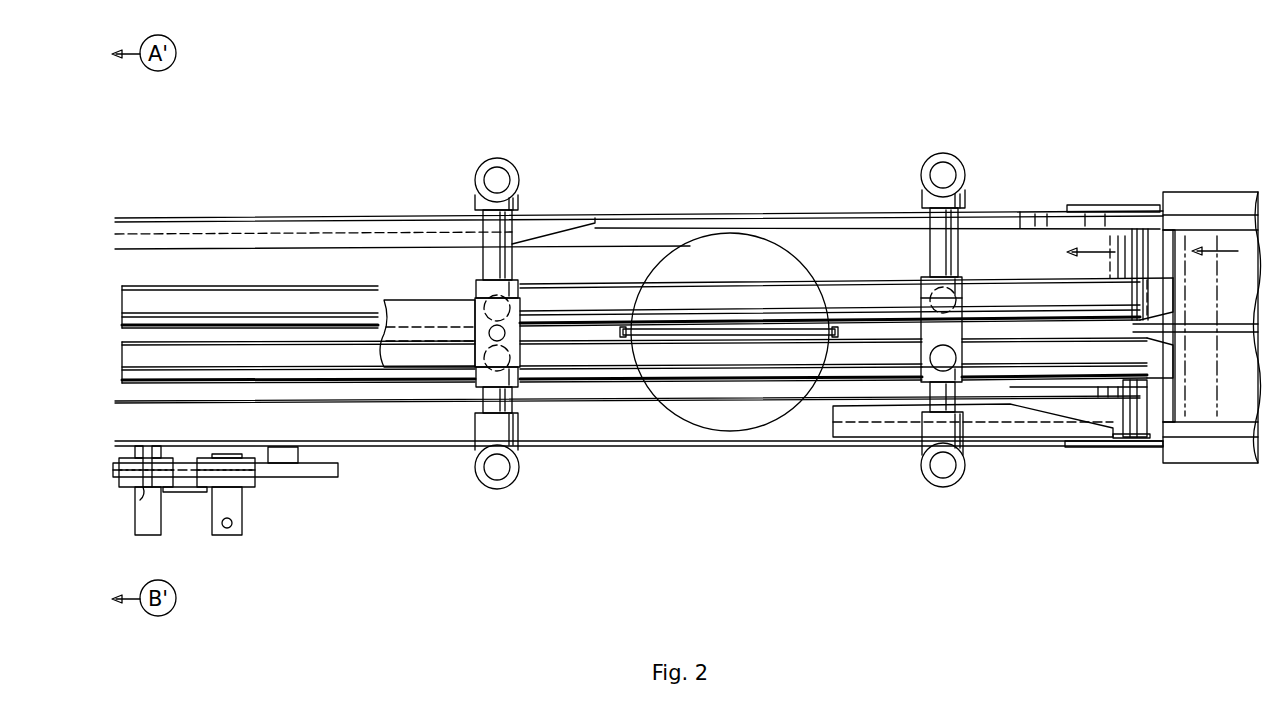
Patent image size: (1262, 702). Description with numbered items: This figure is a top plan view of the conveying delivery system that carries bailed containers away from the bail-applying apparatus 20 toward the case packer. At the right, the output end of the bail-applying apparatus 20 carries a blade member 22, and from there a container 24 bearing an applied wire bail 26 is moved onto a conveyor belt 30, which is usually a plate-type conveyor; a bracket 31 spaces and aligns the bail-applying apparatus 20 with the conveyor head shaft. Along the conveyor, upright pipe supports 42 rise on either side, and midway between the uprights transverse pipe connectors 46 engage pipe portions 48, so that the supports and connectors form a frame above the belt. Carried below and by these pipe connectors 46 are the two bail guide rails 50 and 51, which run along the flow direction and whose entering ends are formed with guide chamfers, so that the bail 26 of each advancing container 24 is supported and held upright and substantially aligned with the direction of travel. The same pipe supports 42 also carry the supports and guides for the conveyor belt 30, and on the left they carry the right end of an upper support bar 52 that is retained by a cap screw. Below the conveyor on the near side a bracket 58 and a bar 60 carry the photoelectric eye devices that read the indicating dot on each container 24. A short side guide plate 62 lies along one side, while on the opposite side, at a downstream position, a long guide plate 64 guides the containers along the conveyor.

The bail-applying apparatus 20 is at (1205, 455).
The blade member 22 is at (1197, 325).
The container 24 is at (786, 262).
The wire bail 26 is at (668, 322).
The conveyor belt 30 is at (658, 240).
The bracket 31 is at (1118, 205).
The upright pipe supports 42 is at (947, 158).
The pipe connectors 46 is at (518, 284).
The pipe portions 48 is at (483, 404).
The guide rail 50 is at (1028, 288).
The guide rail 51 is at (566, 368).
The upper support bar 52 is at (401, 300).
The bracket 58 is at (281, 458).
The bar 60 is at (300, 478).
The side guide plate means 62 is at (1032, 430).
The long guide plate 64 is at (333, 222).